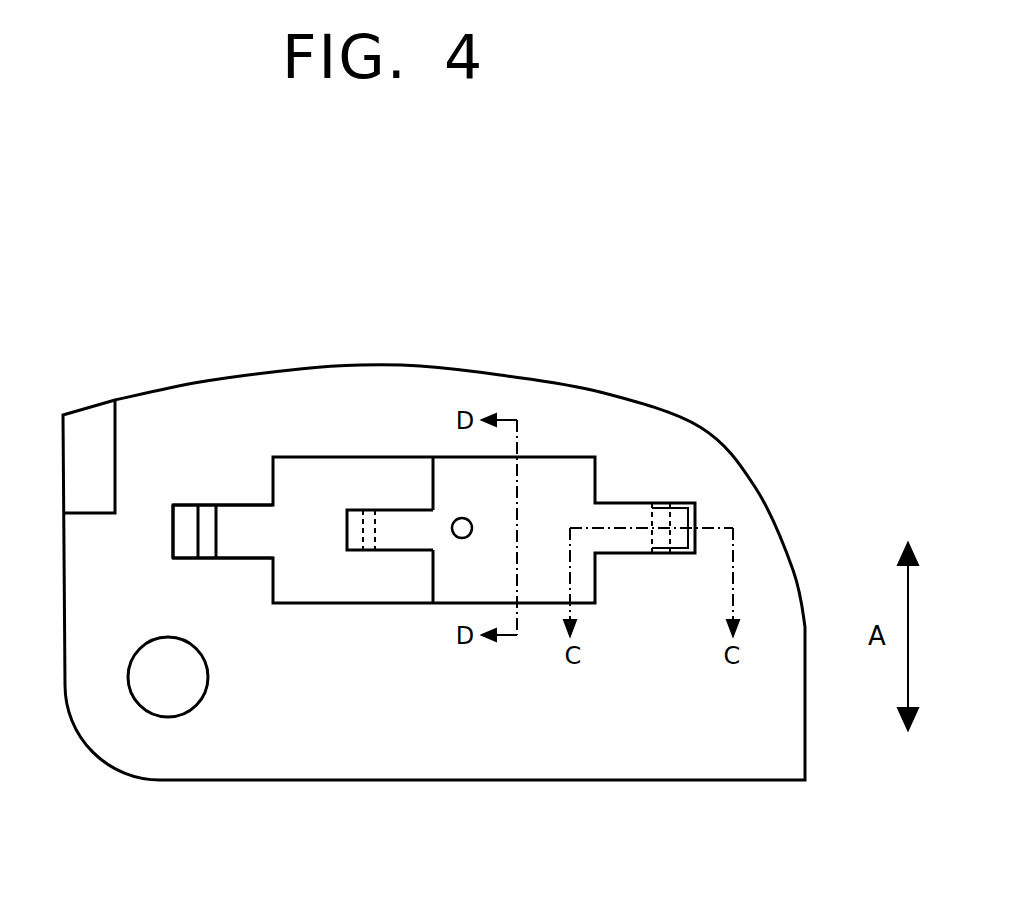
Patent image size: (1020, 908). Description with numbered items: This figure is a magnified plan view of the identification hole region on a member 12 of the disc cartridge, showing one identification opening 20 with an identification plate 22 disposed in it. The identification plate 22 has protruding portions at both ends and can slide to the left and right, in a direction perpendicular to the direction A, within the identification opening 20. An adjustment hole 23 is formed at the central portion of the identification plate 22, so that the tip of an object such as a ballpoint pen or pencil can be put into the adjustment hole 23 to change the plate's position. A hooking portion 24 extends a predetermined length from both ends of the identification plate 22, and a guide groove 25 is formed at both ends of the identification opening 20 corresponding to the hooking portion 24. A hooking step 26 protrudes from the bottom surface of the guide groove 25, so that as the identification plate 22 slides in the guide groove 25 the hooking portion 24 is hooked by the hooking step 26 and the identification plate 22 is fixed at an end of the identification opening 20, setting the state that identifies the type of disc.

The base plate 12 is at (405, 755).
The identification opening 20 is at (618, 452).
The identification plate 22 is at (540, 587).
The adjustment hole 23 is at (458, 518).
The hooking portion 24 is at (393, 516).
The guide groove 25 is at (240, 520).
The hooking step 26 is at (210, 550).